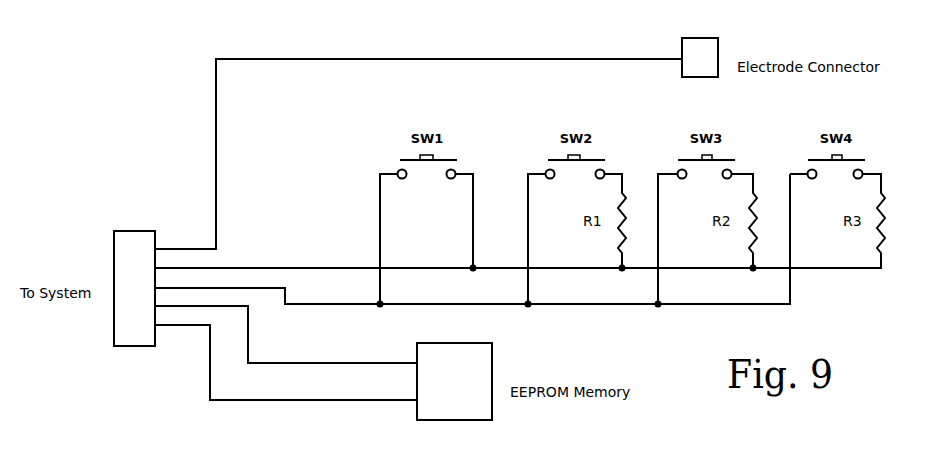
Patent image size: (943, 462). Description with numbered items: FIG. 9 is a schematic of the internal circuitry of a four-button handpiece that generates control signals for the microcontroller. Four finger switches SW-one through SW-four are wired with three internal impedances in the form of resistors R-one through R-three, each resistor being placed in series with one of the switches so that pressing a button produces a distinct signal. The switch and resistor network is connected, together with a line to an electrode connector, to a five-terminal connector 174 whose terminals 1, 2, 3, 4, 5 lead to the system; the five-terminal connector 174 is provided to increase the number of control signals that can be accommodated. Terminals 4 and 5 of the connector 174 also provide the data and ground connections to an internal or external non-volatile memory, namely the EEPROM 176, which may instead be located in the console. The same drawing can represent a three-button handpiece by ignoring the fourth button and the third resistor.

The five-terminal connector 174 is at (492, 229).
The EEPROM 176 is at (482, 360).
The connector pin 1 is at (410, 159).
The connector pin 2 is at (509, 266).
The connector pin 3 is at (464, 239).
The connector pin 4 is at (277, 331).
The connector pin 5 is at (277, 359).